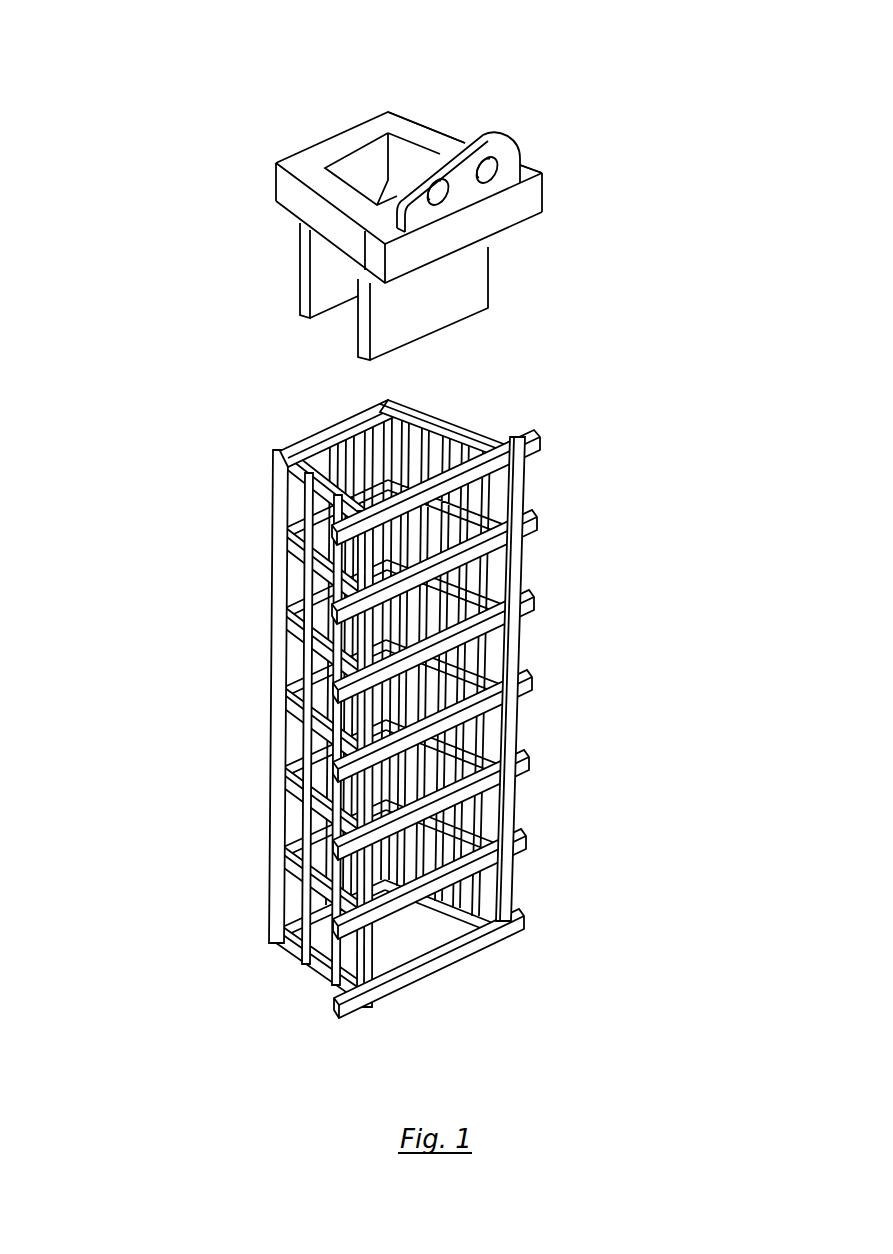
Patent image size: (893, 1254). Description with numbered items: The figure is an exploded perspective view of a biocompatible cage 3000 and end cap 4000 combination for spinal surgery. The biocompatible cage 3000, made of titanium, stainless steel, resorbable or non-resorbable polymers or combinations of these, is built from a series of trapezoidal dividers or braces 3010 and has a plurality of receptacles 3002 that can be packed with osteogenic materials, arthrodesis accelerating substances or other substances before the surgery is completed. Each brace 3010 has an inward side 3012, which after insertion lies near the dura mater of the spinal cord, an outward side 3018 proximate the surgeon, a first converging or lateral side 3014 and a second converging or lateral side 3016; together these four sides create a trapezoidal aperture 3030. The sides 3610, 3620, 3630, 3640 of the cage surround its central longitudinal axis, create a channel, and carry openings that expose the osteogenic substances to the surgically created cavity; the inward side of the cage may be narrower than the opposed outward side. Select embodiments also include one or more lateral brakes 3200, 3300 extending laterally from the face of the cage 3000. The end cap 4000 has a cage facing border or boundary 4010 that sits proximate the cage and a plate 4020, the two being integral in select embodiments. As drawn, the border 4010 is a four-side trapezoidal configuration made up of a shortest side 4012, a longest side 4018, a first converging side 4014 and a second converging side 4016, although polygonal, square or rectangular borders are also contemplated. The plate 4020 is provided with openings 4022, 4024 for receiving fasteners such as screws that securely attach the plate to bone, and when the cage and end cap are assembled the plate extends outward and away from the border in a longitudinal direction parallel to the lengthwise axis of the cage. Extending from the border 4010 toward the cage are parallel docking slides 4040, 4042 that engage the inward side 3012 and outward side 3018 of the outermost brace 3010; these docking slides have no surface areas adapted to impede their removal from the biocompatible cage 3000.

The end cap 4000 is at (593, 90).
The cage facing border or boundary 4010 is at (314, 212).
The shortest side 4012 is at (338, 128).
The first converging side 4014 is at (322, 203).
The second converging side 4016 is at (427, 122).
The longest side 4018 is at (380, 262).
The plate 4020 is at (548, 191).
The opening 4022 is at (453, 200).
The opening 4024 is at (500, 158).
The docking slide 4040 is at (298, 298).
The docking slide 4042 is at (494, 290).
The biocompatible cage 3000 is at (193, 668).
The receptacle 3002 is at (398, 953).
The trapezoidal divider or brace 3010 is at (492, 474).
The inward side 3012 is at (333, 423).
The first converging or lateral side 3014 is at (326, 494).
The second converging or lateral side 3016 is at (460, 417).
The outward side 3018 is at (443, 490).
The trapezoidal aperture 3030 is at (426, 937).
The lateral brake 3200 is at (327, 838).
The lateral brake 3300 is at (536, 540).
The side 3610 is at (267, 874).
The side 3620 is at (284, 440).
The side 3630 is at (523, 650).
The side 3640 is at (366, 975).